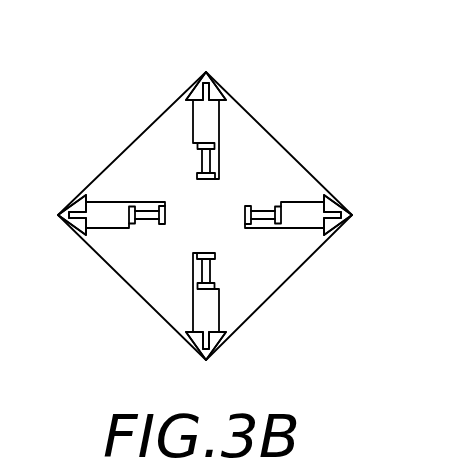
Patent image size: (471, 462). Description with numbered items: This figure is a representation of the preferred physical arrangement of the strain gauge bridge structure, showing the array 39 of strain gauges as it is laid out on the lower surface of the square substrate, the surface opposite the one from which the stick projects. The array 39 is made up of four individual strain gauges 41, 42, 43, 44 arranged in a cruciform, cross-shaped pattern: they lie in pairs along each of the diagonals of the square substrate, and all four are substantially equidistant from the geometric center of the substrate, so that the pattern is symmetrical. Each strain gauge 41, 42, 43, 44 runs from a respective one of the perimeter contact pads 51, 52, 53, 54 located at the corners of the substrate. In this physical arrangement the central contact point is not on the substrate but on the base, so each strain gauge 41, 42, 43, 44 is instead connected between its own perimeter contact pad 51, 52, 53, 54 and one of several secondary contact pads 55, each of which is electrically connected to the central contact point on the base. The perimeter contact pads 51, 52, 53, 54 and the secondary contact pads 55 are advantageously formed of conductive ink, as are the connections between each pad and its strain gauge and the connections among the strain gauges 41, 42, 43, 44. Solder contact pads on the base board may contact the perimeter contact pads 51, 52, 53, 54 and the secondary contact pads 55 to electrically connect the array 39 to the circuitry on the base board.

The array of strain gauges 39 is at (322, 134).
The strain gauge 41 is at (190, 158).
The strain gauge 42 is at (226, 266).
The strain gauge 43 is at (148, 235).
The strain gauge 44 is at (260, 194).
The perimeter contact pad 51 is at (201, 89).
The perimeter contact pad 52 is at (218, 348).
The perimeter contact pad 53 is at (76, 224).
The perimeter contact pad 54 is at (337, 207).
The secondary contact pad 55 is at (213, 89).